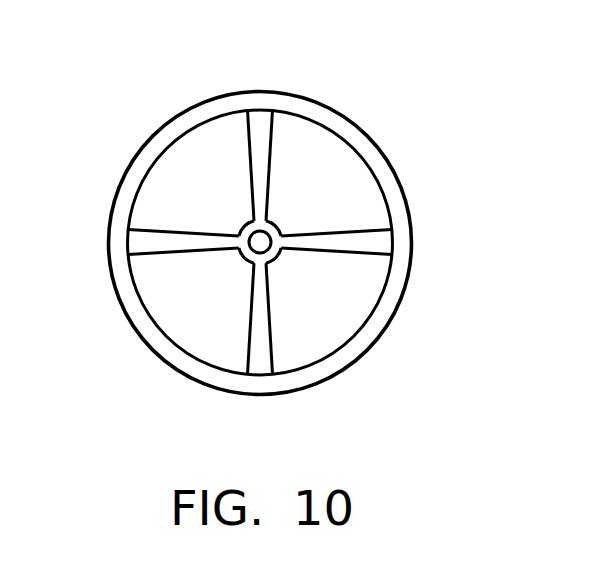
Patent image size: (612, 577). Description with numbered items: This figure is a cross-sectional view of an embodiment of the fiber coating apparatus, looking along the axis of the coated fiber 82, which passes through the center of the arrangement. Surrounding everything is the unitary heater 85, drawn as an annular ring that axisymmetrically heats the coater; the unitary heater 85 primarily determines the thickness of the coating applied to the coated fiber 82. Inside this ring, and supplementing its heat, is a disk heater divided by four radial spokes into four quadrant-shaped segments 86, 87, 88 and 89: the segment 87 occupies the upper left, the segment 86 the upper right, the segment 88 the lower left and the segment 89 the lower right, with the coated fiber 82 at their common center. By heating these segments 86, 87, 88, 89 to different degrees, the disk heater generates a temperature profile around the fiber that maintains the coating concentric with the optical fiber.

The coated fiber 82 is at (270, 227).
The unitary heater 85 is at (395, 207).
The segment 86 is at (355, 180).
The segment 87 is at (172, 175).
The segment 88 is at (170, 310).
The segment 89 is at (322, 335).